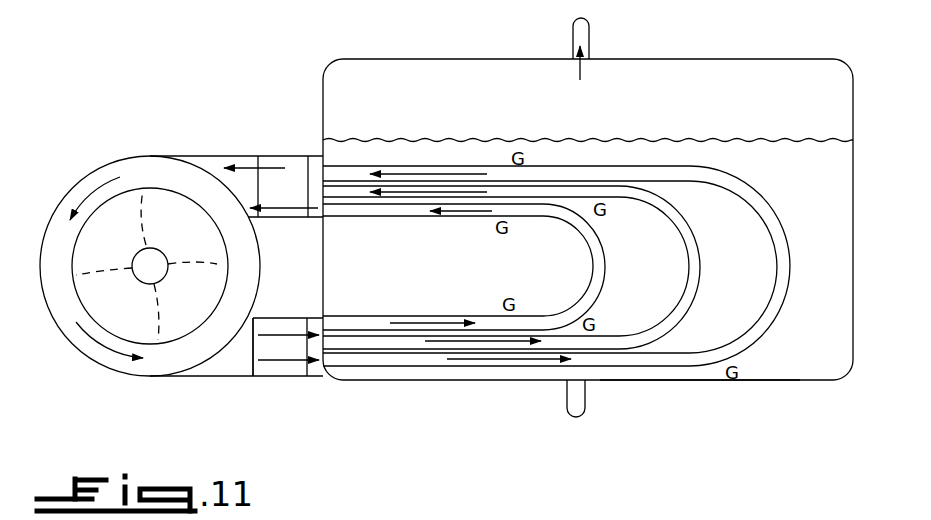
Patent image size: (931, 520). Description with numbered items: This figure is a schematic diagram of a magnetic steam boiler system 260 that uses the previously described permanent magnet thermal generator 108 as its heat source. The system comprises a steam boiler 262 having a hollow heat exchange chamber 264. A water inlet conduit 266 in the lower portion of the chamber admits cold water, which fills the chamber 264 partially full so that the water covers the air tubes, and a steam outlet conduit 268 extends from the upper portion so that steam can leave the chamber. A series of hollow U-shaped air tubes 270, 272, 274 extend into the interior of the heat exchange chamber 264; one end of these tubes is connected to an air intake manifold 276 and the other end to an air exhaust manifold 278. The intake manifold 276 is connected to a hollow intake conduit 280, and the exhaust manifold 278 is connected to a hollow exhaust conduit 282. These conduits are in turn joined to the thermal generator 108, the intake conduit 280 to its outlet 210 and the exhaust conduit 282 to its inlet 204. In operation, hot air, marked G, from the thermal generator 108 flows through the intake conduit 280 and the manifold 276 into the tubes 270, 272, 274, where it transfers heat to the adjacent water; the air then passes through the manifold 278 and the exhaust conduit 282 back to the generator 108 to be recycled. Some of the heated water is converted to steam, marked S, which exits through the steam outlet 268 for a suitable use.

The permanent magnet thermal generator 108 is at (66, 334).
The inlet 204 is at (270, 160).
The outlet 210 is at (262, 372).
The magnetic steam boiler system 260 is at (309, 411).
The steam boiler 262 is at (667, 56).
The heat exchange chamber 264 is at (688, 383).
The water inlet conduit 266 is at (566, 410).
The steam outlet conduit 268 is at (596, 27).
The U-shaped air tube 270 is at (592, 267).
The U-shaped air tube 272 is at (677, 225).
The U-shaped air tube 274 is at (707, 352).
The air intake manifold 276 is at (321, 378).
The air exhaust manifold 278 is at (316, 163).
The intake conduit 280 is at (289, 372).
The exhaust conduit 282 is at (281, 158).